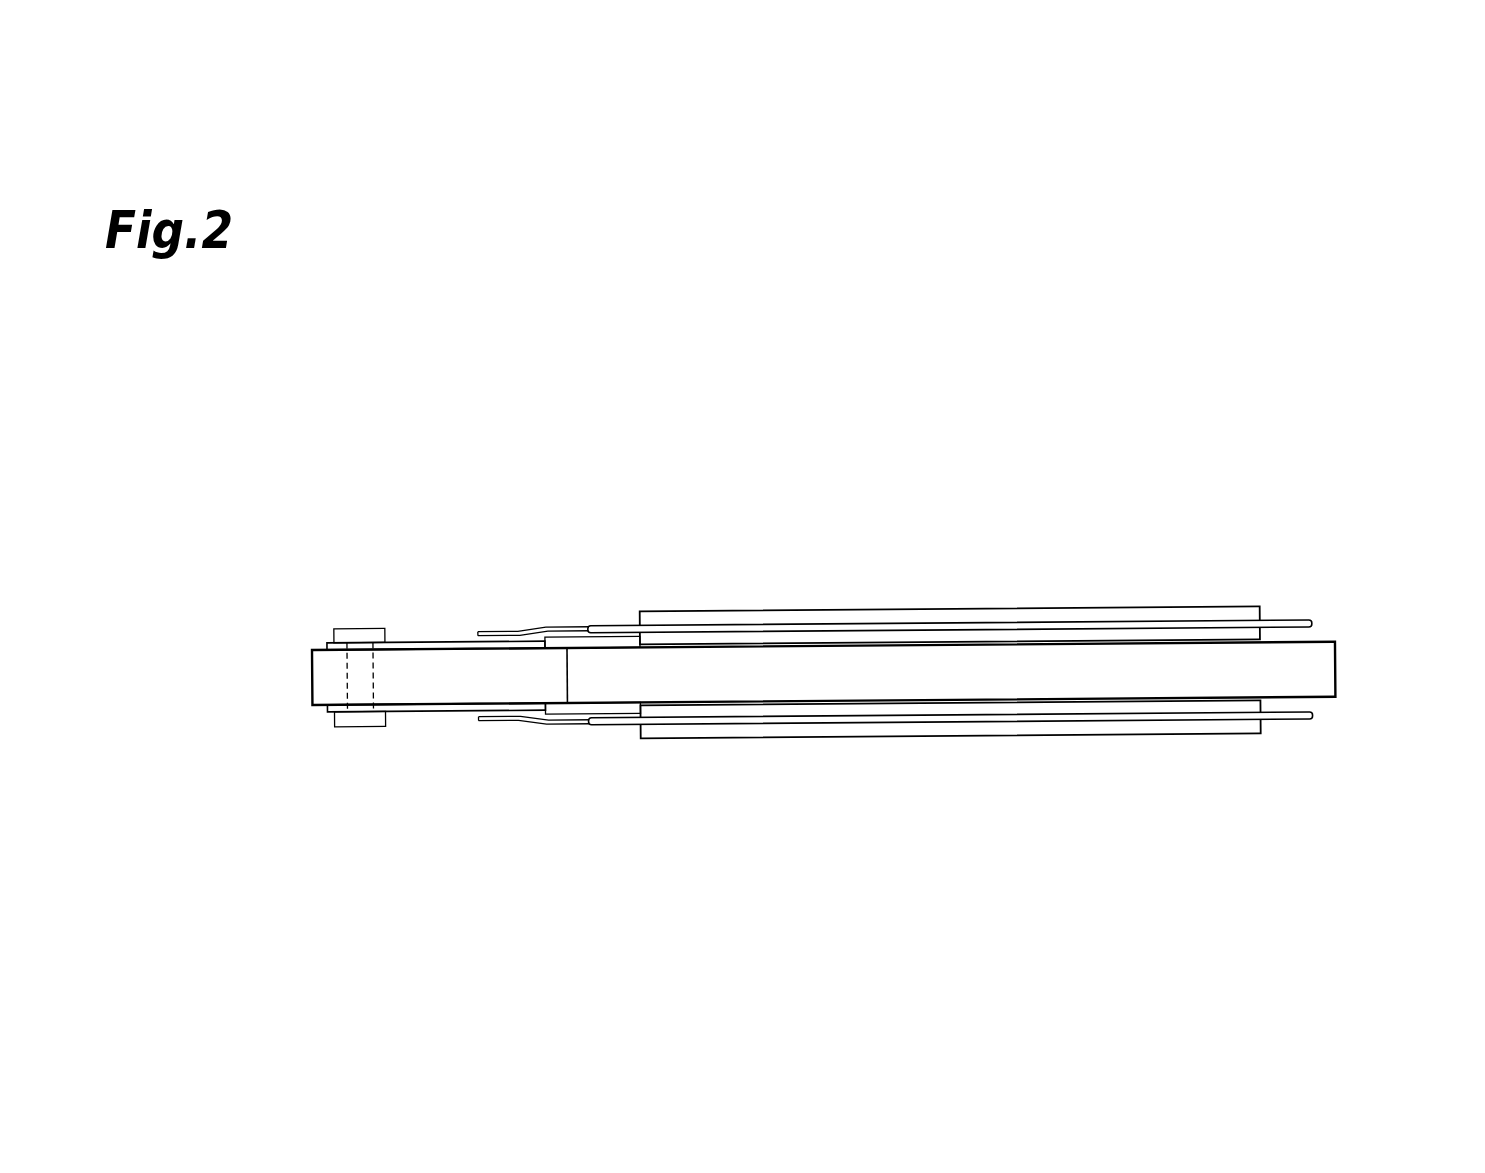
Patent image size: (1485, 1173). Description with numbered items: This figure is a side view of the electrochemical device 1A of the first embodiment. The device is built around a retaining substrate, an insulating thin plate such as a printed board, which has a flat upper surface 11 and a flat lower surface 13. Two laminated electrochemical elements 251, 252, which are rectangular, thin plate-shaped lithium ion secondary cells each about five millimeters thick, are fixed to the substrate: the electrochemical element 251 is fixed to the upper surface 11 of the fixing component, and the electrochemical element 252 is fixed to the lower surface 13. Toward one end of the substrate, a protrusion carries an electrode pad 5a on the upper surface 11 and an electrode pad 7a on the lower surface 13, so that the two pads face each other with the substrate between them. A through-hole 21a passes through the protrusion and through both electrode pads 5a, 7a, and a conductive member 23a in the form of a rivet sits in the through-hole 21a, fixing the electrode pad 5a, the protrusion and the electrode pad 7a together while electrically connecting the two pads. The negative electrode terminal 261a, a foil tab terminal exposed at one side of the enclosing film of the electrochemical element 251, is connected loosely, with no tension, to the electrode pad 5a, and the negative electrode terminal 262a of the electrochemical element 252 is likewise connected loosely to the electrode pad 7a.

The electrochemical device 1A is at (1136, 543).
The electrode pad 5a is at (324, 646).
The electrode pad 7a is at (327, 711).
The upper surface 11 is at (1326, 641).
The lower surface 13 is at (1327, 697).
The through-hole 21a is at (378, 678).
The conductive member 23a is at (355, 629).
The electrochemical element 251 is at (966, 612).
The electrochemical element 252 is at (1017, 735).
The negative electrode terminal 261a is at (556, 631).
The negative electrode terminal 262a is at (557, 726).